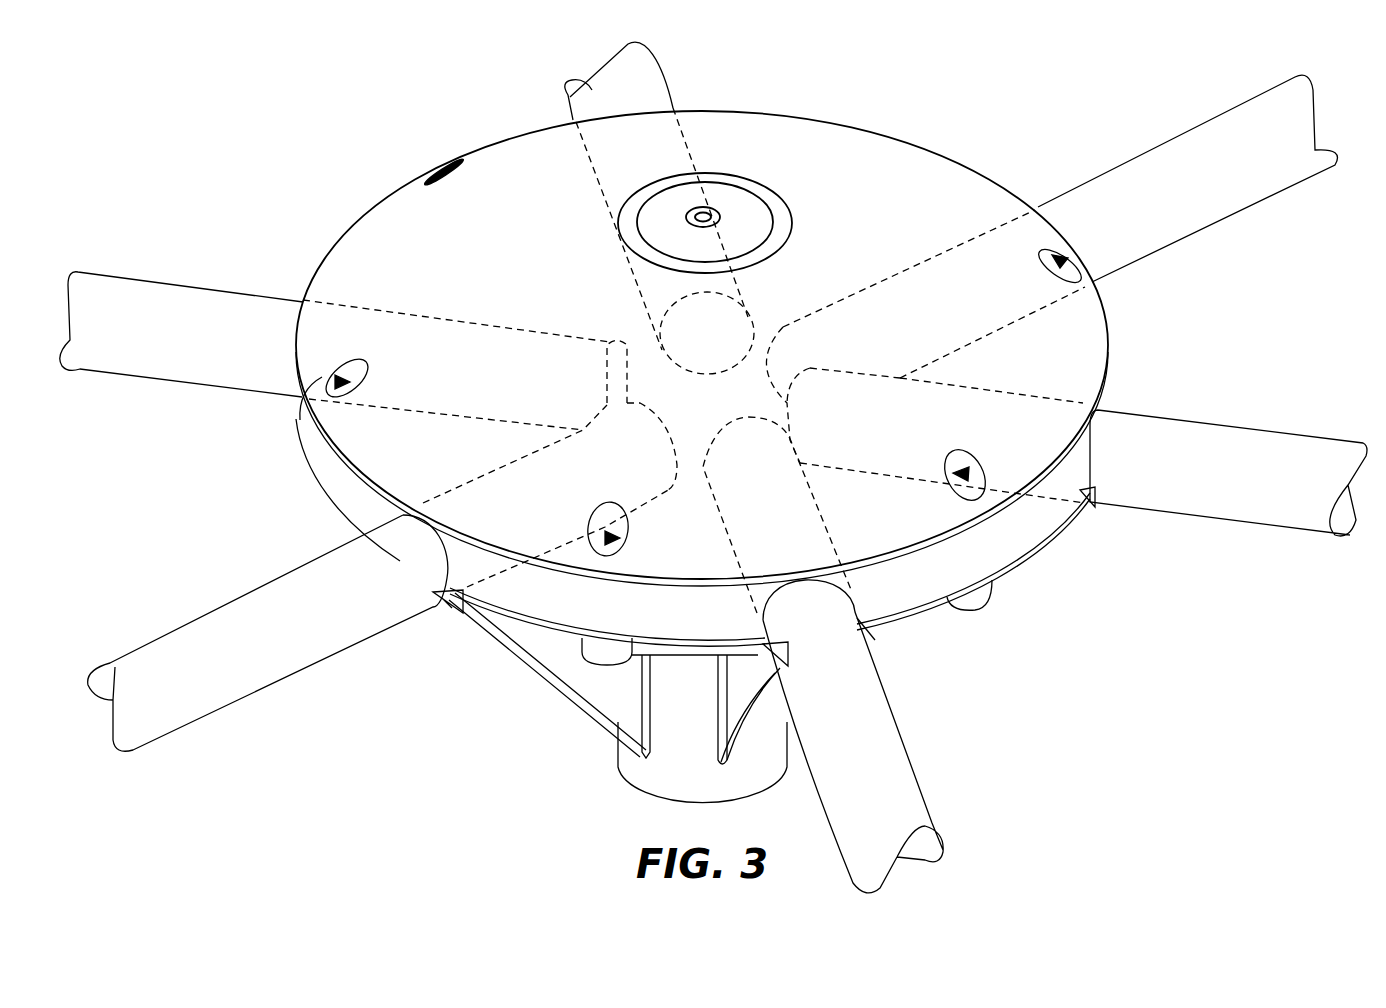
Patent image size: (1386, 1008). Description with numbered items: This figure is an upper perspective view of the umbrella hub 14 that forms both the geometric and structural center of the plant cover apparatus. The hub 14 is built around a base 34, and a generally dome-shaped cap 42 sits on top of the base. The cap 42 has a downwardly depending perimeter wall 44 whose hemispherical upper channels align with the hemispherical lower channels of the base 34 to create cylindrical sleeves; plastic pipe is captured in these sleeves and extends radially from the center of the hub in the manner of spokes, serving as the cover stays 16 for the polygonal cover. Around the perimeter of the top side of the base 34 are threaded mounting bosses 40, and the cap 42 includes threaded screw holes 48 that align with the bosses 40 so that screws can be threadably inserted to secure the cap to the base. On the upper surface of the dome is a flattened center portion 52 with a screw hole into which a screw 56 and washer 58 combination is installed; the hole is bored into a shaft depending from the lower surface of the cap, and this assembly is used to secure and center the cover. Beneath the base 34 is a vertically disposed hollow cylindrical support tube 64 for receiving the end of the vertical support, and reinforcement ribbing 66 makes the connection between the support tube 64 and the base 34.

The umbrella hub 14 is at (1021, 104).
The cover stays 16 is at (660, 70).
The base 34 is at (547, 627).
The threaded mounting bosses 40 is at (597, 647).
The cap 42 is at (843, 140).
The perimeter wall 44 is at (983, 538).
The threaded screw holes 48 is at (437, 168).
The flattened center portion 52 is at (777, 206).
The screw 56 is at (697, 207).
The washer 58 is at (737, 198).
The hollow cylindrical support tube 64 is at (647, 772).
The reinforcement ribbing 66 is at (610, 687).